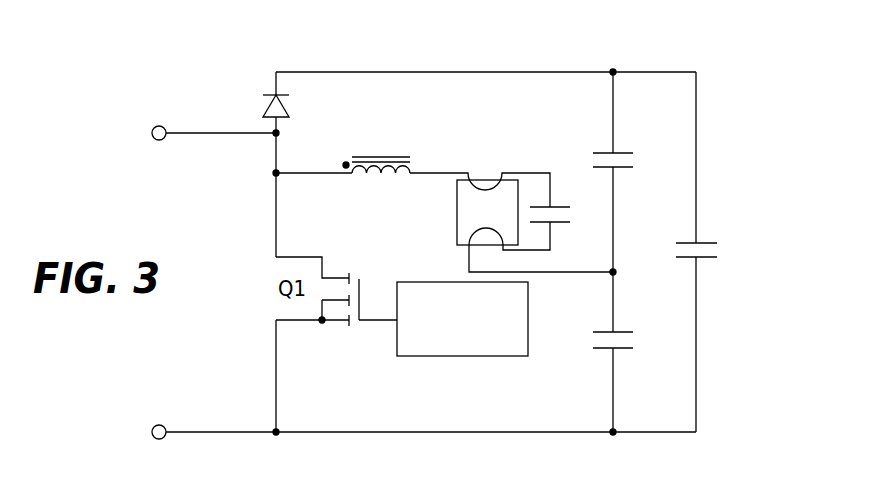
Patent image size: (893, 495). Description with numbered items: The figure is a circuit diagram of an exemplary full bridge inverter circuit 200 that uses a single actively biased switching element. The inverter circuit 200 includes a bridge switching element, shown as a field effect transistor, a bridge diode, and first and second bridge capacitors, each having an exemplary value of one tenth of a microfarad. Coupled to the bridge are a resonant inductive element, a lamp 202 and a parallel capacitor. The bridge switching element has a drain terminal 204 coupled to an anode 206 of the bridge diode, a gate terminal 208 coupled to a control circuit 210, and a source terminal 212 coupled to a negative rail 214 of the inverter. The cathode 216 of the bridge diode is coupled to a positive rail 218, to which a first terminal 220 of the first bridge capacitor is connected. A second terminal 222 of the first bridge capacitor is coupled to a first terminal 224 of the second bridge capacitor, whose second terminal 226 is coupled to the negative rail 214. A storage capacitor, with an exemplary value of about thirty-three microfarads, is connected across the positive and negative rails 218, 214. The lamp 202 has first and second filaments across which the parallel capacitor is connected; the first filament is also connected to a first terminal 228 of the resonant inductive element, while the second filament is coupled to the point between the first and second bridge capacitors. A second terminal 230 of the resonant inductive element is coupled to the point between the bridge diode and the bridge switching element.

The full bridge inverter circuit 200 is at (538, 62).
The lamp 202 is at (457, 212).
The drain terminal 204 is at (296, 255).
The anode 206 is at (277, 118).
The gate terminal 208 is at (378, 323).
The control circuit 210 is at (530, 305).
The source terminal 212 is at (313, 323).
The negative rail 214 is at (358, 432).
The cathode 216 is at (276, 80).
The positive rail 218 is at (405, 72).
The first terminal of the first bridge capacitor 220 is at (613, 123).
The second terminal of the first bridge capacitor 222 is at (613, 212).
The first terminal of the second bridge capacitor 224 is at (613, 302).
The second terminal of the second bridge capacitor 226 is at (613, 390).
The first terminal of the resonant inductive element 228 is at (437, 173).
The second terminal of the resonant inductive element 230 is at (297, 173).